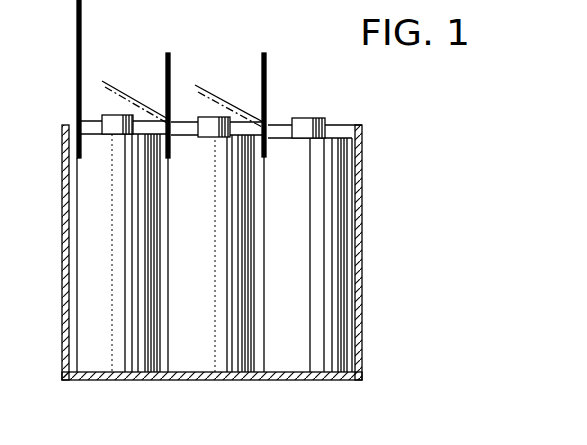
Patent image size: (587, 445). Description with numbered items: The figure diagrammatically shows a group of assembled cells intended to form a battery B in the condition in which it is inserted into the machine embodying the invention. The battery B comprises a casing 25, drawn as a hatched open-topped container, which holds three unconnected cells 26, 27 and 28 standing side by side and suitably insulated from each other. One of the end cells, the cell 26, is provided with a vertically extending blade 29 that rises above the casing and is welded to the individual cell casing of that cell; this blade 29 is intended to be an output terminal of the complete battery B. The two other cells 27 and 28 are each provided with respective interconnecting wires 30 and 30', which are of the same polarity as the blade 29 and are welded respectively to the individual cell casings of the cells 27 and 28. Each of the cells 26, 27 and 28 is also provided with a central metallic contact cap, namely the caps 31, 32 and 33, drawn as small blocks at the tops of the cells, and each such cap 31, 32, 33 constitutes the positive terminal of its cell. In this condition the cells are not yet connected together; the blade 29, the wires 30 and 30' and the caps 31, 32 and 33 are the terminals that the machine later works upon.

The battery B is at (374, 184).
The casing 25 is at (360, 243).
The cell 26 is at (108, 360).
The cell 27 is at (212, 355).
The cell 28 is at (297, 360).
The blade 29 is at (77, 30).
The interconnecting wire 30 is at (191, 199).
The interconnecting wire 30' is at (291, 202).
The contact cap 31 is at (117, 117).
The contact cap 32 is at (240, 82).
The contact cap 33 is at (311, 119).